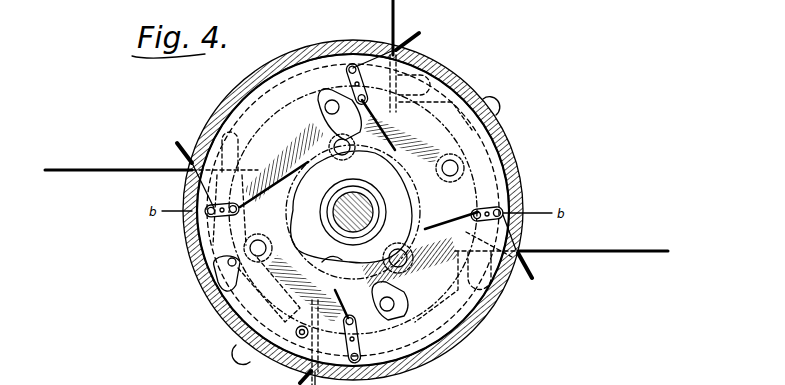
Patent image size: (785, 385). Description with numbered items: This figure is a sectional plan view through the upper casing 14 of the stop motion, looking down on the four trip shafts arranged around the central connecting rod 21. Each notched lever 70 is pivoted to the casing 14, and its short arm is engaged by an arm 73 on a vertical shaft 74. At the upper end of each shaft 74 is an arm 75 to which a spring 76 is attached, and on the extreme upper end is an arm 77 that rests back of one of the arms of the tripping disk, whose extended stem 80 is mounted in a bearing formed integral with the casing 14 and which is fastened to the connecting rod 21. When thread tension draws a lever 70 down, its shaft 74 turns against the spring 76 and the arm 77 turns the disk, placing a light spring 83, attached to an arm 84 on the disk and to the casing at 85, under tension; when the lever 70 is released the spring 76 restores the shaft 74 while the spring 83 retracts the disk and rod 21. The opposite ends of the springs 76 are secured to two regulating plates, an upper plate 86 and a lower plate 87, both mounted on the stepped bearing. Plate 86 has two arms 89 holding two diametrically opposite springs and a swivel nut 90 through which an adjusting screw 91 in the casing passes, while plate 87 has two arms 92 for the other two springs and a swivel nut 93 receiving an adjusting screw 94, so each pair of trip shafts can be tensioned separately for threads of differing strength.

The casing 14 is at (466, 88).
The connecting rod 21 is at (350, 212).
The lever 70 is at (95, 168).
The arm 73 is at (536, 275).
The shaft 74 is at (350, 67).
The arm 75 is at (245, 211).
The spring 76 is at (299, 130).
The arm 77 is at (359, 208).
The stem 80 is at (371, 202).
The spring 83 is at (262, 296).
The arm 84 is at (302, 339).
The casing attachment point 85 is at (215, 262).
The regulating plate 86 is at (353, 212).
The regulating plate 87 is at (335, 259).
The arm 89 is at (444, 170).
The swivel nut 90 is at (402, 250).
The adjusting screw 91 is at (240, 355).
The arm 92 is at (332, 100).
The swivel nut 93 is at (342, 142).
The adjusting screw 94 is at (500, 108).